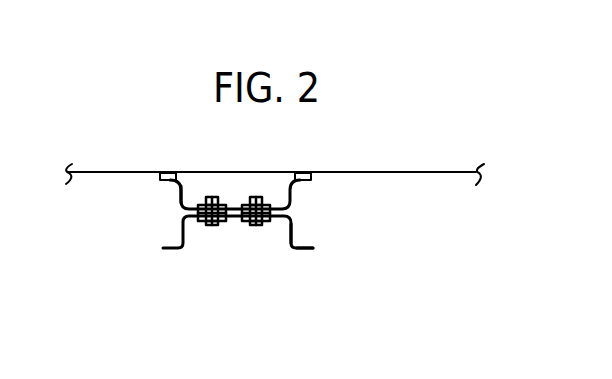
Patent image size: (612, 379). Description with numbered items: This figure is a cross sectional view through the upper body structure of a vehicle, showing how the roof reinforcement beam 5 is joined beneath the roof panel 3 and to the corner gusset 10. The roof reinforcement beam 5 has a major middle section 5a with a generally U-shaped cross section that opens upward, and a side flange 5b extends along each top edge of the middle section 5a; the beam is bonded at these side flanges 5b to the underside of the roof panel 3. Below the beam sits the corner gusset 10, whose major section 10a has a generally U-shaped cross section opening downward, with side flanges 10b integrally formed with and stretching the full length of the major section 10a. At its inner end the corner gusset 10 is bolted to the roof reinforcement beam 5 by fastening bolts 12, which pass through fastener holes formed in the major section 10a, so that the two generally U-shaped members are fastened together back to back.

The roof panel 3 is at (365, 172).
The roof reinforcement beam 5 is at (230, 202).
The middle section 5a is at (182, 203).
The side flange 5b is at (165, 181).
The corner gusset 10 is at (244, 249).
The major section 10a is at (294, 232).
The side flanges 10b is at (302, 251).
The fastening bolts 12 is at (257, 227).